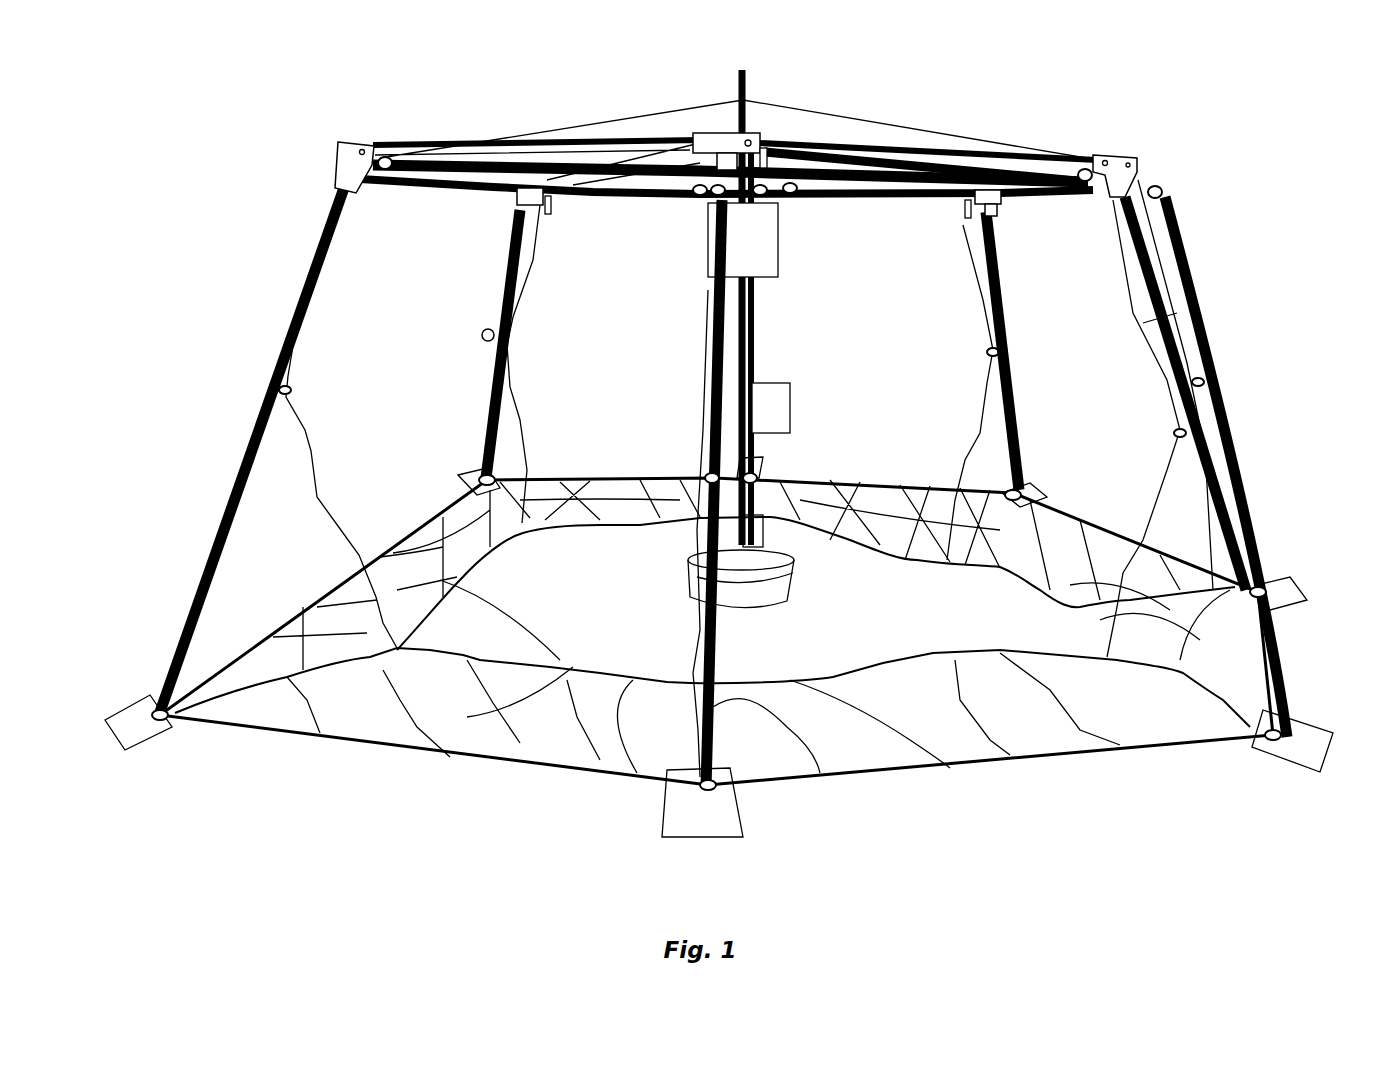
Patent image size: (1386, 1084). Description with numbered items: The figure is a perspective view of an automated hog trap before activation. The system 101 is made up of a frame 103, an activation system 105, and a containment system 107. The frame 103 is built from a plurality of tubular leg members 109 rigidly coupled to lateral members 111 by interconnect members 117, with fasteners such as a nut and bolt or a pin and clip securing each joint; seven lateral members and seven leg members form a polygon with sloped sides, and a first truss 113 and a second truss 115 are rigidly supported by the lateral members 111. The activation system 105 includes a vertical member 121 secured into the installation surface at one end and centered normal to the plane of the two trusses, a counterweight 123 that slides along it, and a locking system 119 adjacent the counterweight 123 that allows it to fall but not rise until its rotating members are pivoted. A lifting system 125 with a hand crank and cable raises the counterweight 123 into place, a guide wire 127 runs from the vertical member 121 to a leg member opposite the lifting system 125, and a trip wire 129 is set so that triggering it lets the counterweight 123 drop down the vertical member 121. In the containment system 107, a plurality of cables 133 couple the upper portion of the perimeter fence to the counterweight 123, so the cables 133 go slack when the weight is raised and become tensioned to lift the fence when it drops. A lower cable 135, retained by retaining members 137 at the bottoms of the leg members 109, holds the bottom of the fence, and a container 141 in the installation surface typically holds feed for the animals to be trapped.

The system 101 is at (183, 93).
The frame 103 is at (742, 438).
The activation system 105 is at (782, 376).
The containment system 107 is at (475, 658).
The leg member 109 is at (235, 468).
The lateral member 111 is at (592, 150).
The first truss 113 is at (895, 160).
The second truss 115 is at (472, 146).
The interconnect member 117 is at (348, 147).
The locking system 119 is at (708, 152).
The vertical member 121 is at (742, 70).
The counterweight 123 is at (778, 240).
The lifting system 125 is at (482, 335).
The guide wire 127 is at (953, 130).
The trip wire 129 is at (778, 545).
The cable 133 is at (1180, 268).
The lower cable 135 is at (590, 465).
The retaining member 137 is at (485, 478).
The container 141 is at (692, 575).